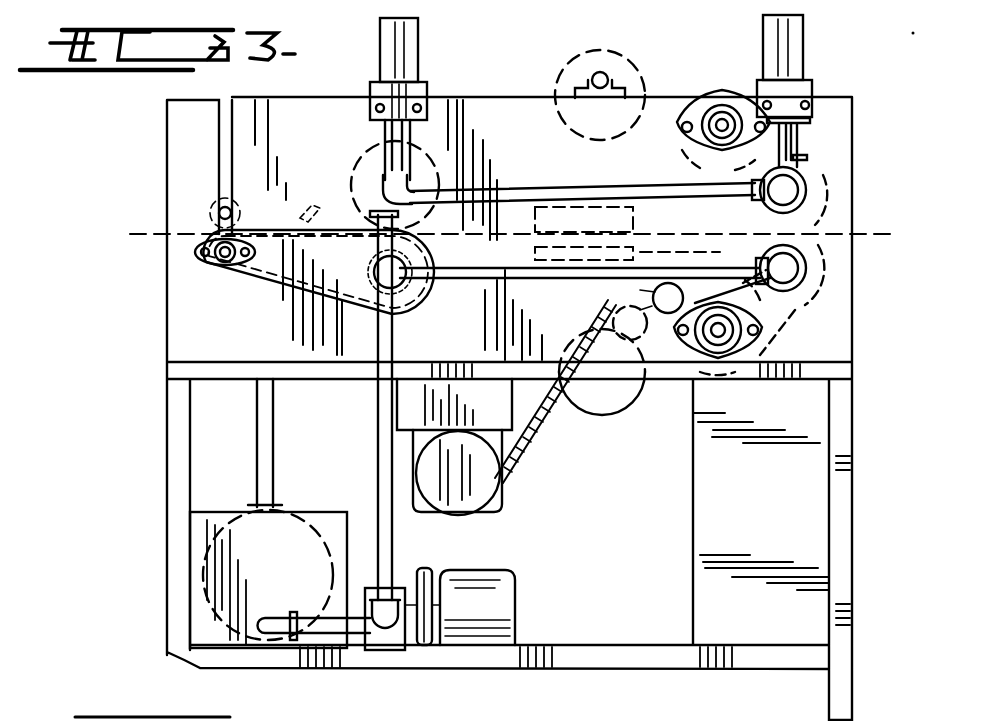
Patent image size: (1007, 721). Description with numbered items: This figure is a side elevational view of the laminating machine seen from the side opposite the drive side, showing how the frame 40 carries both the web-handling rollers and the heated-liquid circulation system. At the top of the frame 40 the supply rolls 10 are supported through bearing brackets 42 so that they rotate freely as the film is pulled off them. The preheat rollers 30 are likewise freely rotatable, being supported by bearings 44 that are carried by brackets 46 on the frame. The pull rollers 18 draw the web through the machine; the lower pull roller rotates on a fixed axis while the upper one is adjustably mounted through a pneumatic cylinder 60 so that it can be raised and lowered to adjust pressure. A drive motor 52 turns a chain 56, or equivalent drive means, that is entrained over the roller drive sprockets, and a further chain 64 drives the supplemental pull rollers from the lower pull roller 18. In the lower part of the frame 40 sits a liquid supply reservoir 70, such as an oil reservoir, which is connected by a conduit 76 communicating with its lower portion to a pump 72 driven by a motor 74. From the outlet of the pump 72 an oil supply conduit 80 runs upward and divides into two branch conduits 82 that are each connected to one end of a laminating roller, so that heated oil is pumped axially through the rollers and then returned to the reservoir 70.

The supply rolls 10 is at (587, 65).
The pull rollers 18 is at (340, 125).
The preheat rollers 30 is at (727, 92).
The frame 40 is at (750, 603).
The bearing brackets 42 is at (610, 75).
The bearings 44 is at (730, 118).
The brackets 46 is at (757, 135).
The drive motor 52 is at (500, 447).
The chain 56 is at (547, 427).
The pneumatic cylinders 60 is at (410, 56).
The chain 64 is at (267, 230).
The liquid supply reservoir 70 is at (210, 540).
The pump 72 is at (398, 650).
The motor 74 is at (485, 625).
The conduit 76 is at (337, 633).
The oil supply conduit 80 is at (388, 500).
The branch conduits 82 is at (520, 190).